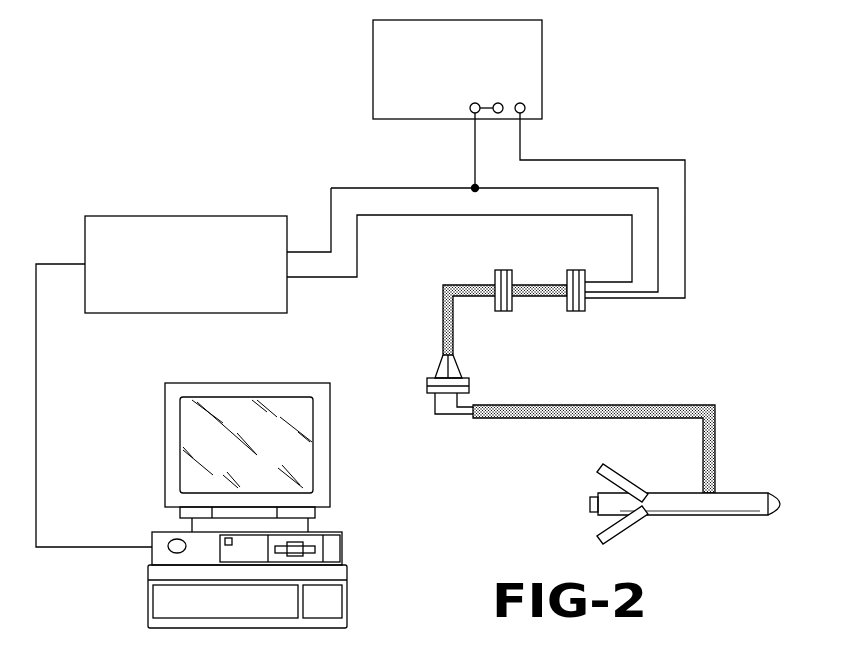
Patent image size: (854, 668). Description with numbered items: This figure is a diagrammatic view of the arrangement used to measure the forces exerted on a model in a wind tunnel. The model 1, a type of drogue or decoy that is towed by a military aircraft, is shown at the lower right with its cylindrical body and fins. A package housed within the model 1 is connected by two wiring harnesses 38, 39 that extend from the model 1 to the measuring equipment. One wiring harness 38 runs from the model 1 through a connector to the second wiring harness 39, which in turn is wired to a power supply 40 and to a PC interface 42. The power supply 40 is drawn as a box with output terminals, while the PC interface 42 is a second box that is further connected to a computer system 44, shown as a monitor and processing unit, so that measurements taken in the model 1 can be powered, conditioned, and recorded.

The model 1 is at (695, 515).
The wiring harness 38 is at (588, 405).
The wiring harness 39 is at (443, 325).
The power supply 40 is at (542, 62).
The PC interface 42 is at (187, 215).
The computer system 44 is at (163, 532).